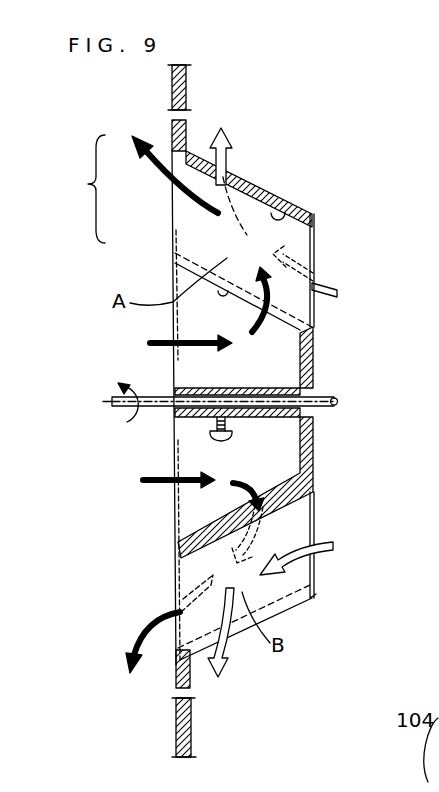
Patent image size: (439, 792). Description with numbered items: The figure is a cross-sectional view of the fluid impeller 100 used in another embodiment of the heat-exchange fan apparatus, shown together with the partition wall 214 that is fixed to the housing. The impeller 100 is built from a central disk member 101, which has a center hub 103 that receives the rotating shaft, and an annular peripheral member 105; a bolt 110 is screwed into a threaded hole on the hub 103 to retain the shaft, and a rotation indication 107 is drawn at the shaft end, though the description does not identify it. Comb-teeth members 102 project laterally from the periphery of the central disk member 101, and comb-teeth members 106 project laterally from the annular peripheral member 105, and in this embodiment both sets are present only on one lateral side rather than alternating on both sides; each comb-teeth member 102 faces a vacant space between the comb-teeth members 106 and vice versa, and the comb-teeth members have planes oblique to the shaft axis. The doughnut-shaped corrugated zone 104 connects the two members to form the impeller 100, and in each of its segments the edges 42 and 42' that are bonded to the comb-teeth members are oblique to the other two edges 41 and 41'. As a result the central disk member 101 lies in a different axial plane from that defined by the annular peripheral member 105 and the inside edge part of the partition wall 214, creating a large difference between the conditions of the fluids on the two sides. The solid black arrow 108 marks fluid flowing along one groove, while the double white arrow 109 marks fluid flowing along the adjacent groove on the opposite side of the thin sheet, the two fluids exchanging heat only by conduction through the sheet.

The partition wall 214 is at (172, 86).
The annular peripheral member 105 is at (188, 118).
The corrugated zone 104 is at (77, 189).
The edge 41 is at (142, 408).
The comb-teeth members 106 is at (257, 182).
The edge 42 is at (277, 201).
The edge 41' is at (338, 406).
The fluid impeller 100 is at (414, 197).
The comb-teeth members 102 is at (175, 262).
The edge 42' is at (220, 308).
The center hub 103 is at (175, 389).
The central disk member 101 is at (312, 380).
The rotation 107 is at (127, 422).
The solid black arrow 108 is at (298, 327).
The bolt 110 is at (238, 436).
The double white arrow 109 is at (330, 546).